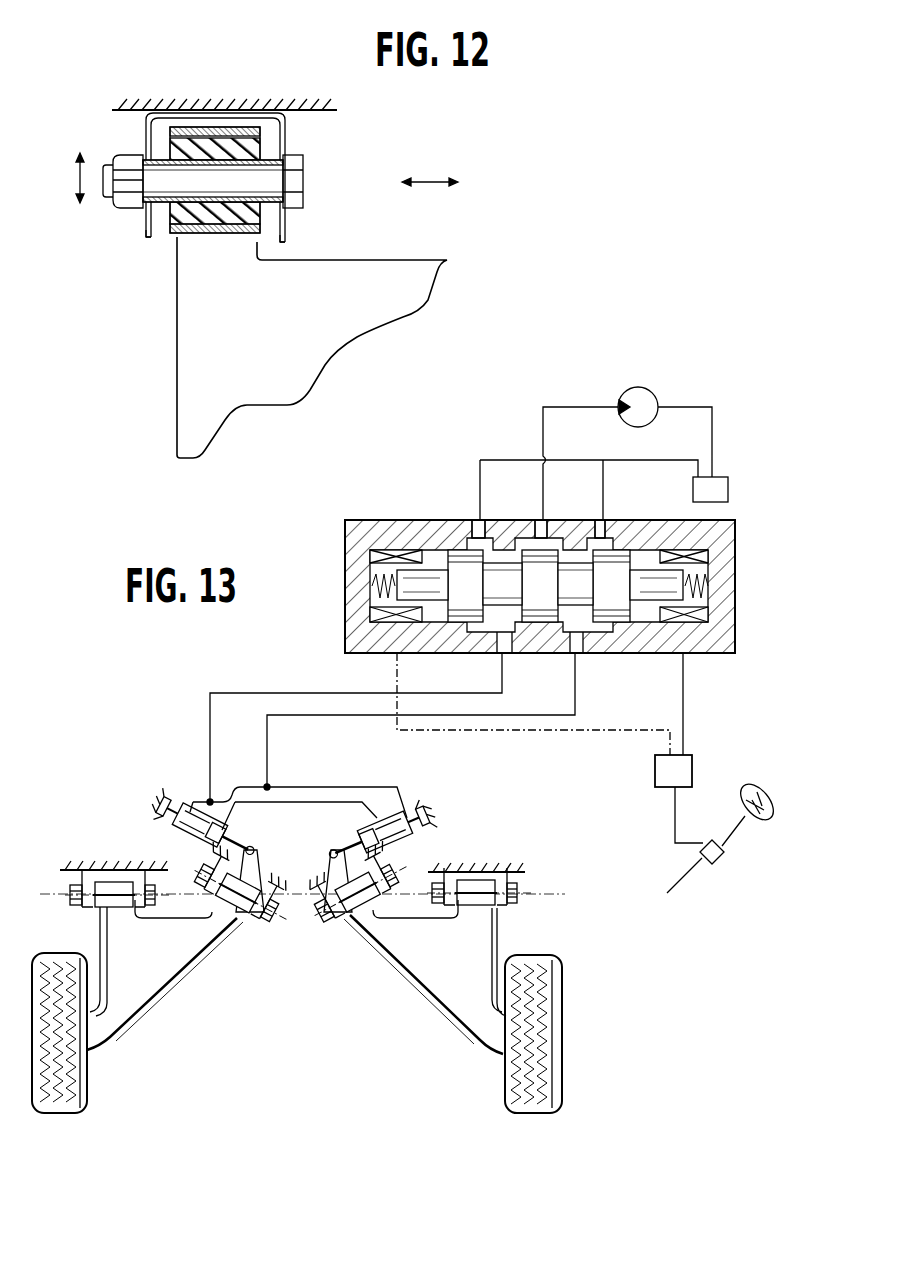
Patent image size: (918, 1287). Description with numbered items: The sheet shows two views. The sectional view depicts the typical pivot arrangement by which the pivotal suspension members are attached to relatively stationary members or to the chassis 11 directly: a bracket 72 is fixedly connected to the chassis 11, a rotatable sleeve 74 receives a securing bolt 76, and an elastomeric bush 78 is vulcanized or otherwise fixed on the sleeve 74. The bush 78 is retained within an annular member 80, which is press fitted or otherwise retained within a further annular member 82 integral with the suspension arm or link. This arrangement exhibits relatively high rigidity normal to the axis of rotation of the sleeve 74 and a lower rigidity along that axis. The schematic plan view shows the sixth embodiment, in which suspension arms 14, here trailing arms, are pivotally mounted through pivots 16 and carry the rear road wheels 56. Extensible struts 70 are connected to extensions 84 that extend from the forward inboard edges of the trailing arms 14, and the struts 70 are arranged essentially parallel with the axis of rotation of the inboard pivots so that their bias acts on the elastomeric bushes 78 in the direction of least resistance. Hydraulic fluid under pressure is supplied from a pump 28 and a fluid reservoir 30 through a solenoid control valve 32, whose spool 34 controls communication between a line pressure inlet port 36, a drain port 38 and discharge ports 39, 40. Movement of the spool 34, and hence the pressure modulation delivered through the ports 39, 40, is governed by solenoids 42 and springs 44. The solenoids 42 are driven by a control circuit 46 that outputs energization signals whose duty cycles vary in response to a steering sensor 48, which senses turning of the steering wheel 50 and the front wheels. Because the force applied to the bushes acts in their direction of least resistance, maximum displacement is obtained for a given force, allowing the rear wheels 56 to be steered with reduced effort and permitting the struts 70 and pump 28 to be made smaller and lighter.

In FIG. 12, the vehicle chassis 11 is at (256, 100).
In FIG. 13, the suspension arm 14 is at (160, 1000).
In FIG. 13, the pivot 16 is at (112, 908).
In FIG. 13, the pump 28 is at (648, 393).
In FIG. 13, the fluid reservoir 30 is at (722, 477).
In FIG. 13, the solenoid control valve 32 is at (377, 516).
In FIG. 13, the spool 34 is at (430, 555).
In FIG. 13, the line pressure inlet port 36 is at (540, 532).
In FIG. 13, the drain port 38 is at (475, 532).
In FIG. 13, the discharge port 39 is at (497, 645).
In FIG. 13, the discharge port 40 is at (572, 645).
In FIG. 13, the solenoid 42 is at (370, 612).
In FIG. 13, the spring 44 is at (370, 592).
In FIG. 13, the control circuit 46 is at (655, 770).
In FIG. 13, the steering sensor 48 is at (700, 852).
In FIG. 13, the steering wheel 50 is at (765, 818).
In FIG. 13, the rear road wheel 56 is at (65, 1092).
In FIG. 13, the extensible strut 70 is at (190, 808).
In FIG. 12, the bracket 72 is at (283, 142).
In FIG. 12, the rotatable sleeve 74 is at (160, 215).
In FIG. 12, the securing bolt 76 is at (270, 215).
In FIG. 12, the elastomeric bush 78 is at (213, 128).
In FIG. 12, the annular member 80 is at (170, 141).
In FIG. 12, the annular member 82 is at (180, 128).
In FIG. 13, the extension 84 is at (330, 870).